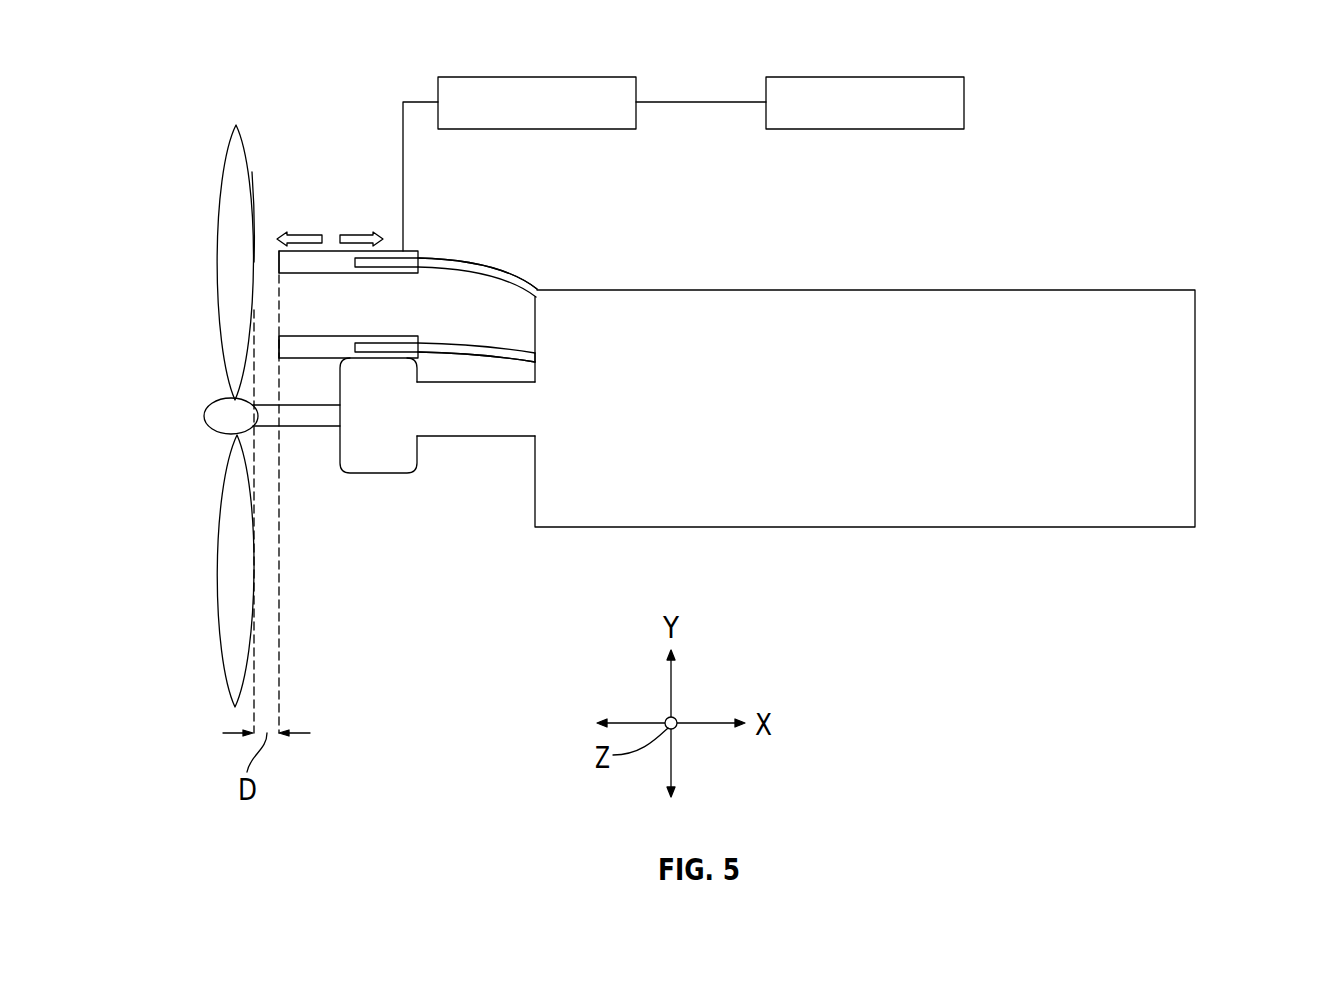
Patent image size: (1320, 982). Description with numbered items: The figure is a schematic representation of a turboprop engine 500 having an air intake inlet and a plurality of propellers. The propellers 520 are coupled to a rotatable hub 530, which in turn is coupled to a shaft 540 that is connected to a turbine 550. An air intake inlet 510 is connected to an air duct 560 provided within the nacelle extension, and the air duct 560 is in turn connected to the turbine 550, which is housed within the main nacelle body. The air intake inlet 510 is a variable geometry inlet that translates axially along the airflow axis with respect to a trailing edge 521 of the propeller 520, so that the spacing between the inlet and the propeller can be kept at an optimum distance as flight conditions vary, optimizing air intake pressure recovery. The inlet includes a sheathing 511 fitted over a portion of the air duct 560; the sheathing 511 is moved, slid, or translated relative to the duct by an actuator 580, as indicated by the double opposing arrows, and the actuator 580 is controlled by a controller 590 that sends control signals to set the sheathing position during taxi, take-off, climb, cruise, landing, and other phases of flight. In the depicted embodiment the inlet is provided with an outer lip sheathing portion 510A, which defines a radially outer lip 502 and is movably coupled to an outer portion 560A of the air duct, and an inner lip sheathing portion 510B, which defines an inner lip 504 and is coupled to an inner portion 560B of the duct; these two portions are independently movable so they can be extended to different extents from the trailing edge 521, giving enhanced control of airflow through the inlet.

The turboprop engine 500 is at (783, 235).
The radially outer lip 502 is at (295, 275).
The inner lip 504 is at (285, 333).
The air intake inlet 510 is at (271, 257).
The outer lip sheathing portion 510A is at (377, 273).
The inner lip sheathing portion 510B is at (302, 359).
The sheathing 511 is at (330, 250).
The propeller 520 is at (220, 187).
The trailing edge 521 is at (252, 172).
The rotatable hub 530 is at (377, 473).
The shaft 540 is at (452, 422).
The turbine 550 is at (1175, 385).
The air duct 560 is at (455, 259).
The outer portion of the air duct 560A is at (518, 280).
The inner portion of the air duct 560B is at (467, 353).
The actuator 580 is at (507, 76).
The controller 590 is at (895, 76).